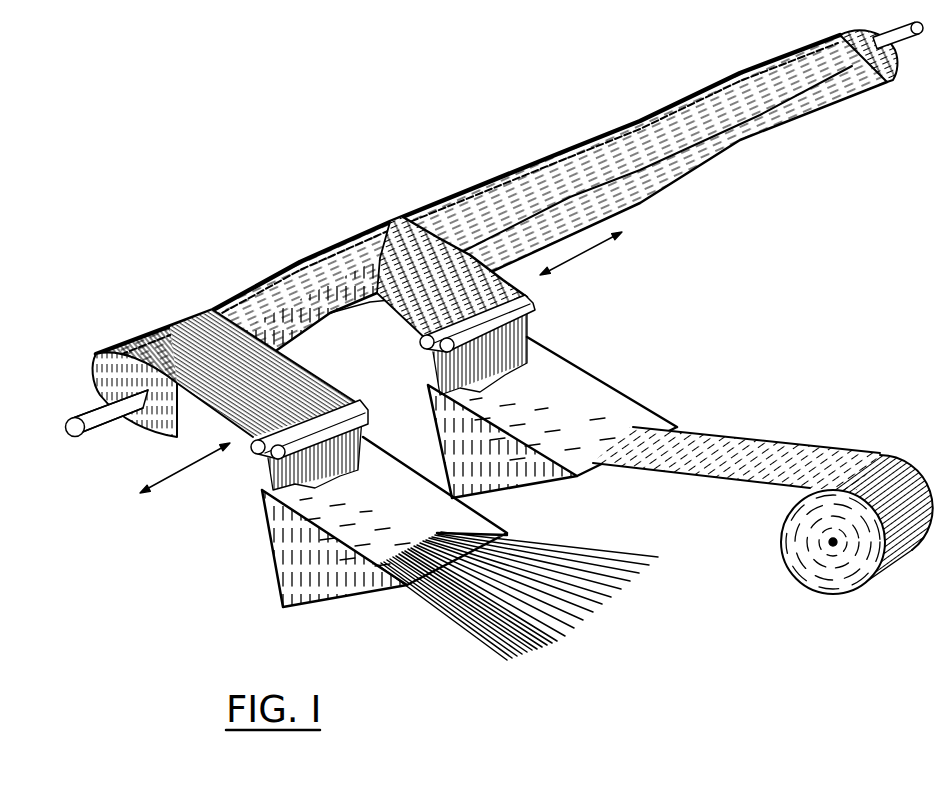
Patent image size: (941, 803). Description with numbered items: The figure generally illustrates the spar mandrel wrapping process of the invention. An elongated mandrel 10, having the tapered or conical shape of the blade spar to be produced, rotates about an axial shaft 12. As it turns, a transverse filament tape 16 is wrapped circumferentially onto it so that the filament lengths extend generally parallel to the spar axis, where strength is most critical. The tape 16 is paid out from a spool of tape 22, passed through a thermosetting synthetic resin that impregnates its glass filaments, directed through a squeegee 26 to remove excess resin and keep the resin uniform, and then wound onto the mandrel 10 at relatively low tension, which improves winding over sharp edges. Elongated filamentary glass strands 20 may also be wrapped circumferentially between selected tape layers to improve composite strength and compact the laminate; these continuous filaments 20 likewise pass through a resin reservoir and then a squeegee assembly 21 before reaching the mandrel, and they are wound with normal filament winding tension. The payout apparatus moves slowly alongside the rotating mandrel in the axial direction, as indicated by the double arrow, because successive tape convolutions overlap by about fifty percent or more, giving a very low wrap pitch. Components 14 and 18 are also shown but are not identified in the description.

The mandrel 10 is at (93, 358).
The axial shaft 12 is at (93, 432).
The first web 14 is at (203, 313).
The transverse filament tape 16 is at (392, 226).
The trough 18 is at (572, 395).
The filamentary glass strands 20 is at (603, 599).
The squeegee assembly 21 is at (257, 452).
The spool of tape 22 is at (840, 593).
The squeegee 26 is at (531, 302).